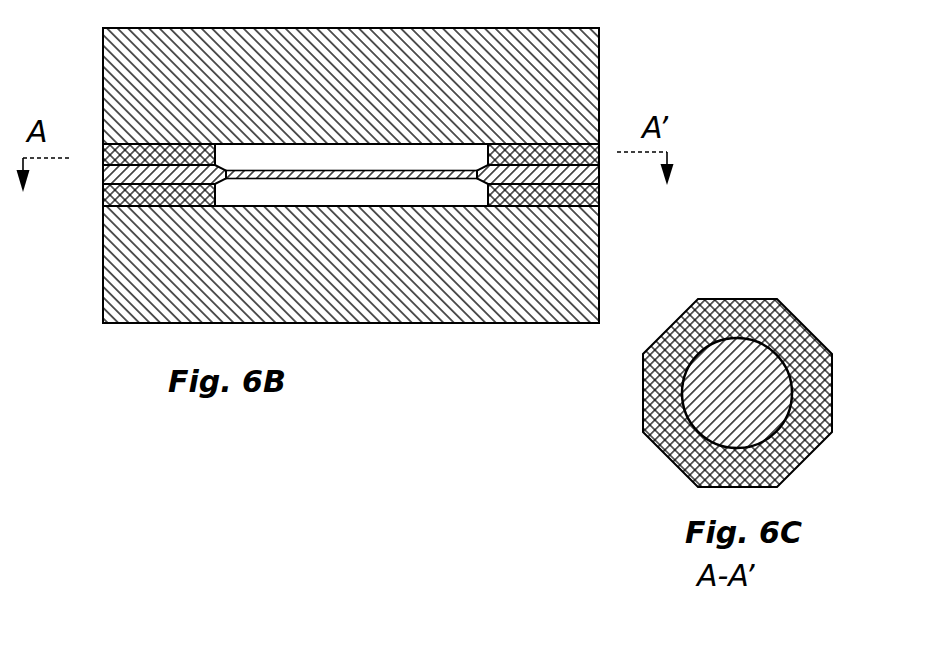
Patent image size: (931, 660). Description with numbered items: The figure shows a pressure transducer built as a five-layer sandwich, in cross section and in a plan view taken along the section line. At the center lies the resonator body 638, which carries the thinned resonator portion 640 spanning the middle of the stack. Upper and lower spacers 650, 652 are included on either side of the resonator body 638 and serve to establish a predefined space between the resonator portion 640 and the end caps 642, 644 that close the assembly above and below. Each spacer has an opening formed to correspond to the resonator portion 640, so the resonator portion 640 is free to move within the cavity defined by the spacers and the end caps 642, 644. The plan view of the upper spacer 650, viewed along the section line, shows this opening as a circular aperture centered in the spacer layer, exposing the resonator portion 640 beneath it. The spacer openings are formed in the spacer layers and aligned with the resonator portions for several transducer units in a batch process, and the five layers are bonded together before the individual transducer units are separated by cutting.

In FIG. 6B, the resonator body 638 is at (600, 178).
In FIG. 6B, the resonator portion 640 is at (358, 171).
In FIG. 6C, the resonator portion 640 is at (710, 405).
In FIG. 6B, the upper end cap 642 is at (600, 64).
In FIG. 6B, the lower end cap 644 is at (600, 254).
In FIG. 6B, the upper spacer 650 is at (103, 155).
In FIG. 6C, the upper spacer 650 is at (662, 442).
In FIG. 6B, the lower spacer 652 is at (103, 195).